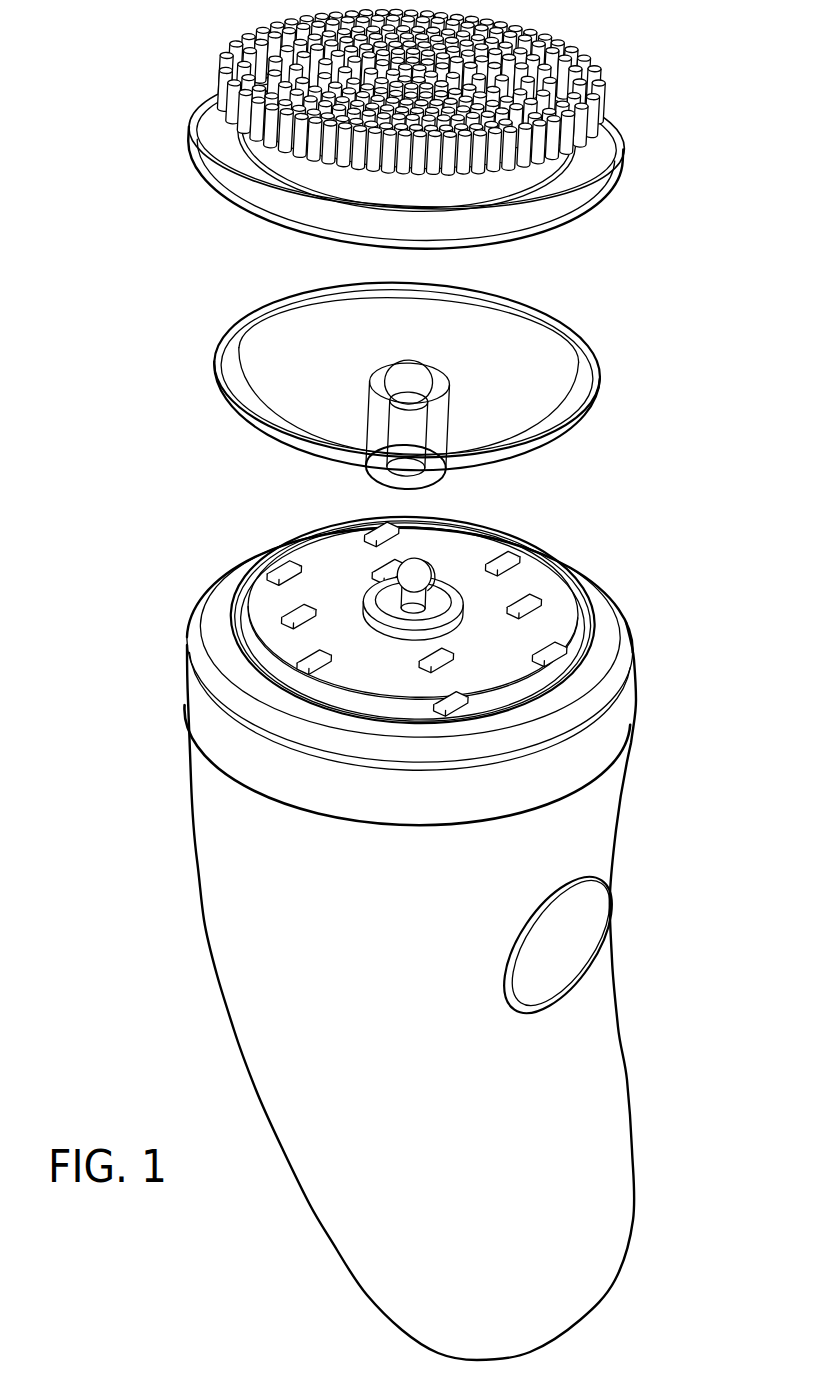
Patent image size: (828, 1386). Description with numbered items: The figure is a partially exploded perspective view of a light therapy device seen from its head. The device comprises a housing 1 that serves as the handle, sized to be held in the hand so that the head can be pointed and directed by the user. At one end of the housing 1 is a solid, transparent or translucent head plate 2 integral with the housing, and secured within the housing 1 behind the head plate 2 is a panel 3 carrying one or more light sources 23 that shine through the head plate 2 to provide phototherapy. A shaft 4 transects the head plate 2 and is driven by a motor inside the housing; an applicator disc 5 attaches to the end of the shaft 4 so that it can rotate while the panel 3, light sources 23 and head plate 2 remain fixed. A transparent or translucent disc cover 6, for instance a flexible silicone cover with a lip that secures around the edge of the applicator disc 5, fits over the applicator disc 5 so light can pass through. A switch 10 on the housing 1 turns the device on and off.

The housing 1 is at (260, 995).
The head plate 2 is at (240, 587).
The panel 3 is at (460, 552).
The shaft 4 is at (403, 572).
The applicator disc 5 is at (226, 352).
The disc cover 6 is at (615, 150).
The switch 10 is at (573, 955).
The light sources 23 is at (530, 597).